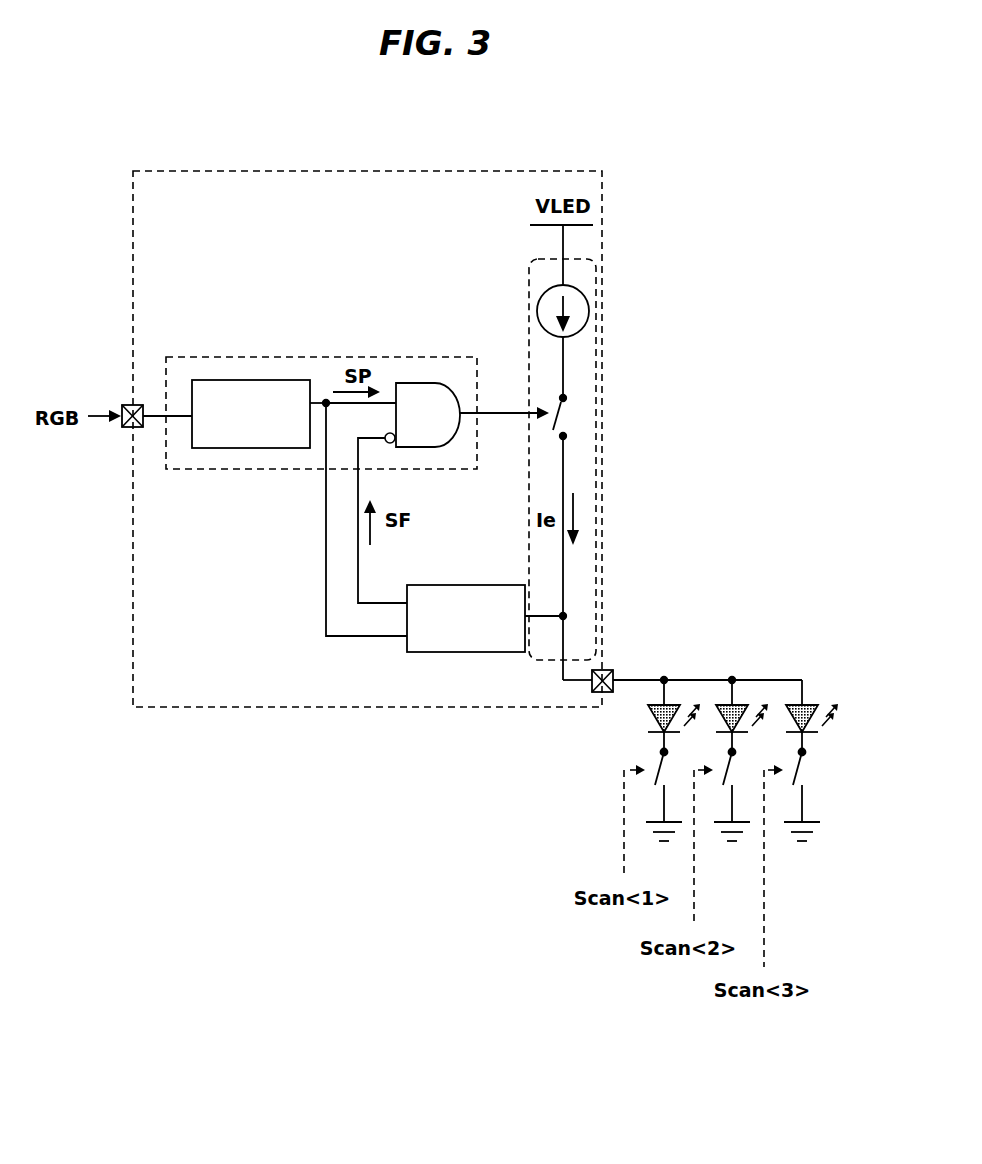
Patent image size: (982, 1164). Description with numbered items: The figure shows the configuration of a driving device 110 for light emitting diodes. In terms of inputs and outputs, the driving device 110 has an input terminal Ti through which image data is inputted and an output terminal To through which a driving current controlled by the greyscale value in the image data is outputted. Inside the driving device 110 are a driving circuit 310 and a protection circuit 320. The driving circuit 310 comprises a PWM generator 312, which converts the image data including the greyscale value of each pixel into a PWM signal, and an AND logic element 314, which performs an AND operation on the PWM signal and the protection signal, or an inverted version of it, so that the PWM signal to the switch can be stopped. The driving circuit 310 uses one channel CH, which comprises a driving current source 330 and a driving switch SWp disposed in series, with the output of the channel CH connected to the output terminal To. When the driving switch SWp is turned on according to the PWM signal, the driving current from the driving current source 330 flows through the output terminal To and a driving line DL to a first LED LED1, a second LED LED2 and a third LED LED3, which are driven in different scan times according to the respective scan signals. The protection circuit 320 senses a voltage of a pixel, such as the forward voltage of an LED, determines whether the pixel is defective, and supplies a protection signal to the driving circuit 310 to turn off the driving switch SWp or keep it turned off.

The driving device 110 is at (177, 250).
The driving circuit 310 is at (166, 462).
The PWM generator 312 is at (290, 380).
The AND logic element 314 is at (425, 383).
The protection circuit 320 is at (430, 652).
The driving current source 330 is at (589, 297).
The channel CH is at (597, 259).
The driving switch SWp is at (575, 417).
The input terminal Ti is at (122, 401).
The output terminal To is at (613, 696).
The driving line DL is at (700, 680).
The first LED LED1 is at (651, 703).
The second LED LED2 is at (718, 703).
The third LED LED3 is at (790, 703).